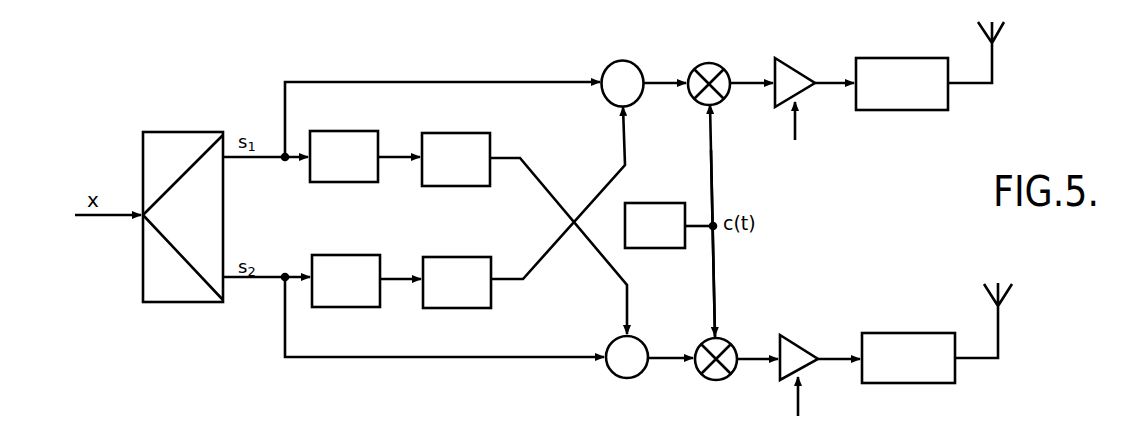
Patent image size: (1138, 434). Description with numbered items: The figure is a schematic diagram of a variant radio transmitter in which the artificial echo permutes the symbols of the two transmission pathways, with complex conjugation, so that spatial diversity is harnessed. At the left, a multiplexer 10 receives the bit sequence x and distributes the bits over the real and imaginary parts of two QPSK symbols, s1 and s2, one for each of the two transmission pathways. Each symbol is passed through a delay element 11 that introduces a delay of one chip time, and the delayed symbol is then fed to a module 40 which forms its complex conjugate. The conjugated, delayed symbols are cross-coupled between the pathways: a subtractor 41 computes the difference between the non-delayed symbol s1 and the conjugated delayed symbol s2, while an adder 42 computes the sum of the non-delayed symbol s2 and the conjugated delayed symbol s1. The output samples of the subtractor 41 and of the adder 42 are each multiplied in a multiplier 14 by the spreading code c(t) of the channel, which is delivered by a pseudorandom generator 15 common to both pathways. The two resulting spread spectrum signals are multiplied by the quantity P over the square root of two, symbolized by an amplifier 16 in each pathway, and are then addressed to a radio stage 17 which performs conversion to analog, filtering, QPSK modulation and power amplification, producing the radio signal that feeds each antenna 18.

The multiplexer 10 is at (182, 132).
The delay element 11 is at (338, 184).
The complex conjugation module 40 is at (453, 188).
The subtractor 41 is at (605, 66).
The adder 42 is at (614, 374).
The multiplier 14 is at (690, 66).
The pseudorandom generator 15 is at (652, 203).
The amplifier 16 is at (790, 68).
The radio stage 17 is at (903, 111).
The antenna 18 is at (993, 50).